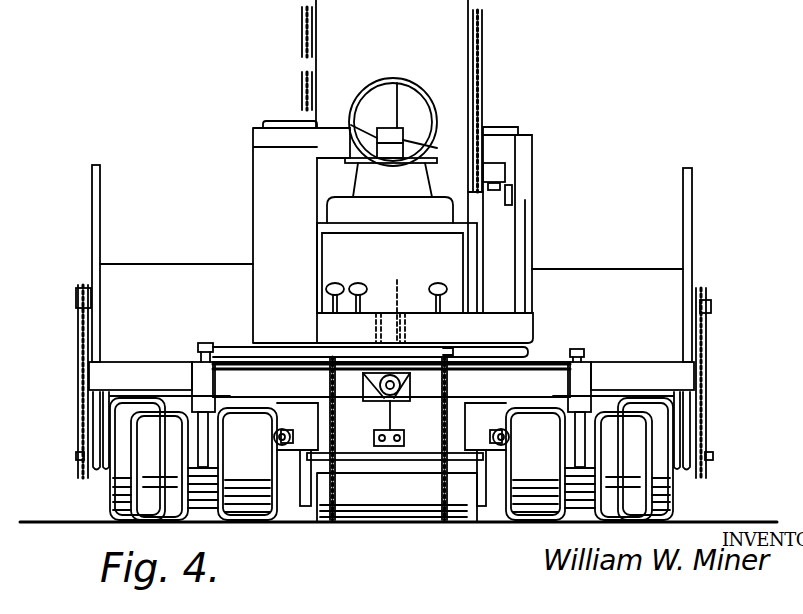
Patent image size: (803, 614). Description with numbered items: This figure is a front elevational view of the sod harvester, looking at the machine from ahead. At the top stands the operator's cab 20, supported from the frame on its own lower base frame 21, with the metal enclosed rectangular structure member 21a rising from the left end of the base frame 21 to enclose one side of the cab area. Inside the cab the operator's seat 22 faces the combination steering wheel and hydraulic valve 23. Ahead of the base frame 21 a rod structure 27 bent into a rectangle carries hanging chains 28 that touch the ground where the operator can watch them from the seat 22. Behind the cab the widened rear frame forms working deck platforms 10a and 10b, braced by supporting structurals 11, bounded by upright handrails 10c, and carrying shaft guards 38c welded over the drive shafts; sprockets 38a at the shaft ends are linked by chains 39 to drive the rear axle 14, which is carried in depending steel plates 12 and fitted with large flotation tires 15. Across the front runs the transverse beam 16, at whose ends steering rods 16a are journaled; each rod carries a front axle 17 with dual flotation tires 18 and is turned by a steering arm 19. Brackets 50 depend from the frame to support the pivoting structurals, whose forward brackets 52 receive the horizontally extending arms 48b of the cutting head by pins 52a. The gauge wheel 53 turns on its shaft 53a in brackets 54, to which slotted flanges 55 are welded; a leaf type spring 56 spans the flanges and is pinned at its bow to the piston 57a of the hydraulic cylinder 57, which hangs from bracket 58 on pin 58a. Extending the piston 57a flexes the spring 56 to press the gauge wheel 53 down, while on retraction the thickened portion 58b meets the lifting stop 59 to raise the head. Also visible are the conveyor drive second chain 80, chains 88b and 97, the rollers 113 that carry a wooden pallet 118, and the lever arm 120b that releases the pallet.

The working deck platform 10a is at (117, 352).
The working deck platform 10b is at (607, 357).
The handrail 10c is at (100, 166).
The supporting structural 11 is at (133, 374).
The steel plate 12 is at (100, 472).
The rear axle 14 is at (76, 455).
The flotation tire 15 is at (115, 498).
The transverse beam 16 is at (462, 385).
The steering rod 16a is at (196, 434).
The front axle 17 is at (198, 461).
The dual flotation tire 18 is at (240, 500).
The steering arm 19 is at (200, 343).
The operator's cab 20 is at (422, 89).
The lower base frame 21 is at (511, 339).
The metal enclosed rectangular structure member 21a is at (256, 190).
The operator's seat 22 is at (410, 199).
The combination steering wheel and hydraulic valve 23 is at (388, 128).
The rod structure 27 is at (517, 347).
The chain 28 is at (445, 512).
The sprocket 38a is at (76, 296).
The shaft guard 38c is at (150, 270).
The chain 39 is at (78, 331).
The horizontally extending arm 48b is at (298, 432).
The bracket 50 is at (257, 407).
The bracket 52 is at (520, 472).
The pin 52a is at (274, 437).
The gauge wheel 53 is at (344, 522).
The shaft 53a is at (305, 506).
The bracket 54 is at (518, 530).
The slotted flange 55 is at (292, 458).
The leaf type spring 56 is at (350, 453).
The hydraulic cylinder 57 is at (393, 298).
The piston 57a is at (394, 433).
The bracket 58 is at (412, 331).
The pin 58a is at (376, 331).
The thickened portion of the piston 58b is at (403, 460).
The lifting stop 59 is at (405, 441).
The second chain 80 is at (484, 55).
The sprocket chain 88b is at (302, 101).
The sprocket chain 97 is at (301, 24).
The roller 113 is at (500, 186).
The wooden pallet 118 is at (505, 170).
The lever arm 120b is at (513, 196).